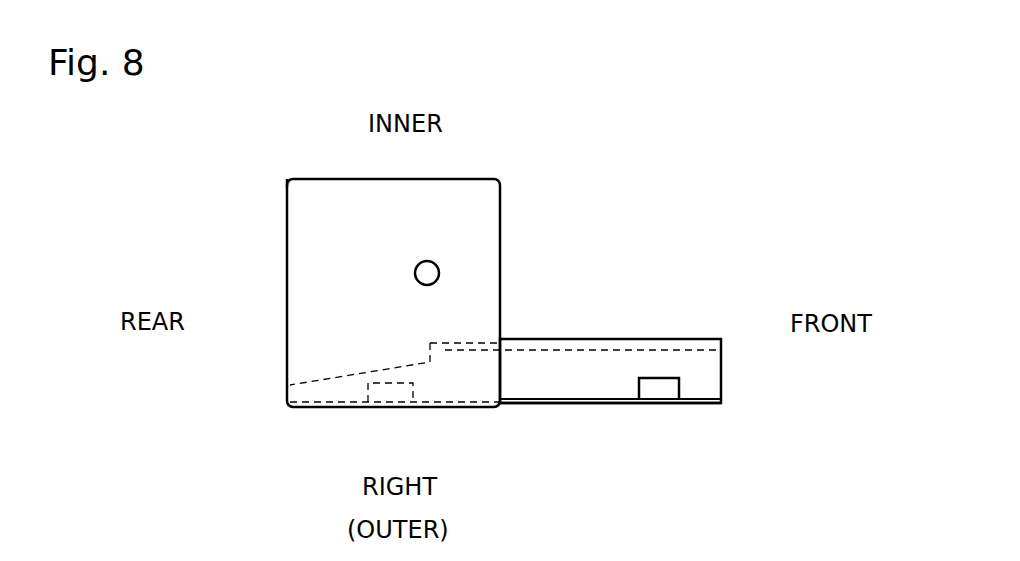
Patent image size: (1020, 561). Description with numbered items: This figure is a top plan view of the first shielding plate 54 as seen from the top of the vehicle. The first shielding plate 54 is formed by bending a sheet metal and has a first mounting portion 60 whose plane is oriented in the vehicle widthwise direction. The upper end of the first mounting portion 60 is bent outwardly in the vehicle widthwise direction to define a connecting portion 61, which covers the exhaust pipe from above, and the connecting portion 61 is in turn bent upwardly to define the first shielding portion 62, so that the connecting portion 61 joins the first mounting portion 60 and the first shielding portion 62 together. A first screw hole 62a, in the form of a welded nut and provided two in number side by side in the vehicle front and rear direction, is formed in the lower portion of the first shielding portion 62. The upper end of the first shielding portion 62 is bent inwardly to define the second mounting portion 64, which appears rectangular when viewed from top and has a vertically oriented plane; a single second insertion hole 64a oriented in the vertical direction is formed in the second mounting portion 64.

The first shielding plate 54 is at (268, 200).
The first mounting portion 60 is at (687, 348).
The connecting portion 61 is at (579, 380).
The first shielding portion 62 is at (523, 404).
The first screw hole 62a is at (383, 398).
The second mounting portion 64 is at (310, 304).
The second insertion hole 64a is at (430, 277).